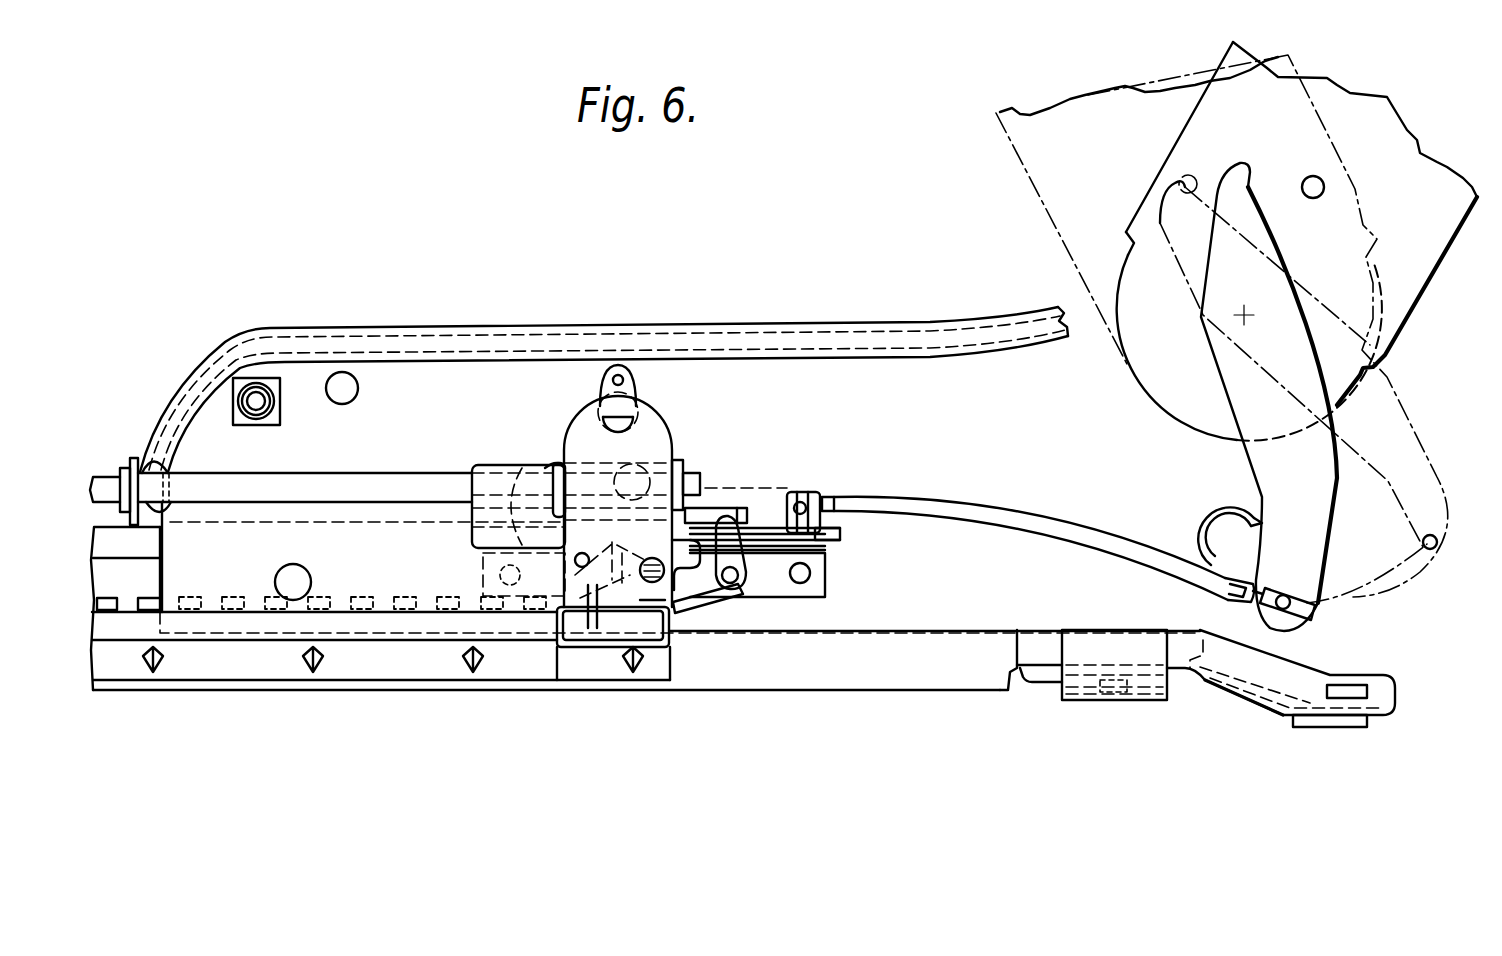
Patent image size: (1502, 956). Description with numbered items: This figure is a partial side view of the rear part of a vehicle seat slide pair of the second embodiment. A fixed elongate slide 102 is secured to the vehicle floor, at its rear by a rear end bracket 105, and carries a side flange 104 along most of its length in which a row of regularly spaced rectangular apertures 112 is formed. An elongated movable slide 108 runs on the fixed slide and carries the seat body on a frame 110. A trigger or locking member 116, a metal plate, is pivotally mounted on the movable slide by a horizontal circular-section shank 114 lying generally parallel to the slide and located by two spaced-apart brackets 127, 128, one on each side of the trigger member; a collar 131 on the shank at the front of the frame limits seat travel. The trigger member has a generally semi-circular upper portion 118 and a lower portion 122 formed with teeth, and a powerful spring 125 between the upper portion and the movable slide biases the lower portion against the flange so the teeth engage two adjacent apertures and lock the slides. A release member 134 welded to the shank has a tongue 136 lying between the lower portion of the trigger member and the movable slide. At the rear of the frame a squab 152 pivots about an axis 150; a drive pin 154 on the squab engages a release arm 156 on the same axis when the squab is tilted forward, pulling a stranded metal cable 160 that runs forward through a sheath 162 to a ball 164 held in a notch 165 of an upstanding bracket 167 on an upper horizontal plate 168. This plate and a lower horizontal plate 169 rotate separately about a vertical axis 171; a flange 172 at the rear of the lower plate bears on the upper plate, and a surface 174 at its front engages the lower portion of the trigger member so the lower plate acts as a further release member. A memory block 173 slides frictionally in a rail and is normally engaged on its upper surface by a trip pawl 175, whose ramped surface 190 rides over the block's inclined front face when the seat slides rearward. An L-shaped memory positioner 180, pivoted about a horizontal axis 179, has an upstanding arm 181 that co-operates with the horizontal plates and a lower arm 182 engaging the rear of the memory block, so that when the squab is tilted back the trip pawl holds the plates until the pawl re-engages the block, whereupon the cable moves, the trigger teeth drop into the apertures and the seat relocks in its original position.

The fixed elongate slide 102 is at (1012, 690).
The side flange 104 is at (120, 585).
The rear end bracket 105 is at (1397, 695).
The movable slide 108 is at (235, 552).
The frame 110 is at (472, 342).
The rectangular apertures 112 is at (219, 609).
The shank 114 is at (326, 490).
The trigger or locking member 116 is at (685, 463).
The upper portion 118 is at (647, 405).
The lower portion 122 is at (648, 622).
The spring 125 is at (590, 396).
The bracket 127 is at (684, 463).
The bracket 128 is at (667, 570).
The collar 131 is at (128, 462).
The release member 134 is at (470, 540).
The tongue 136 is at (606, 580).
The pivotal axis 150 is at (1246, 316).
The seat rear or squab 152 is at (1432, 253).
The drive pin 154 is at (1325, 183).
The release arm 156 is at (1237, 178).
The stranded metal cable 160 is at (1366, 596).
The sheath 162 is at (1090, 538).
The ball 164 is at (836, 500).
The notch 165 is at (798, 492).
The upstanding bracket 167 is at (810, 492).
The upper horizontal plate 168 is at (841, 531).
The lower horizontal plate 169 is at (835, 546).
The vertical axis 171 is at (709, 483).
The flange 172 is at (818, 566).
The memory block 173 is at (652, 627).
The surface 174 is at (560, 470).
The trip pawl 175 is at (500, 577).
The horizontal axis 179 is at (722, 578).
The memory positioner 180 is at (712, 580).
The upstanding arm 181 is at (747, 567).
The lower arm 182 is at (680, 612).
The ramped surface 190 is at (586, 614).